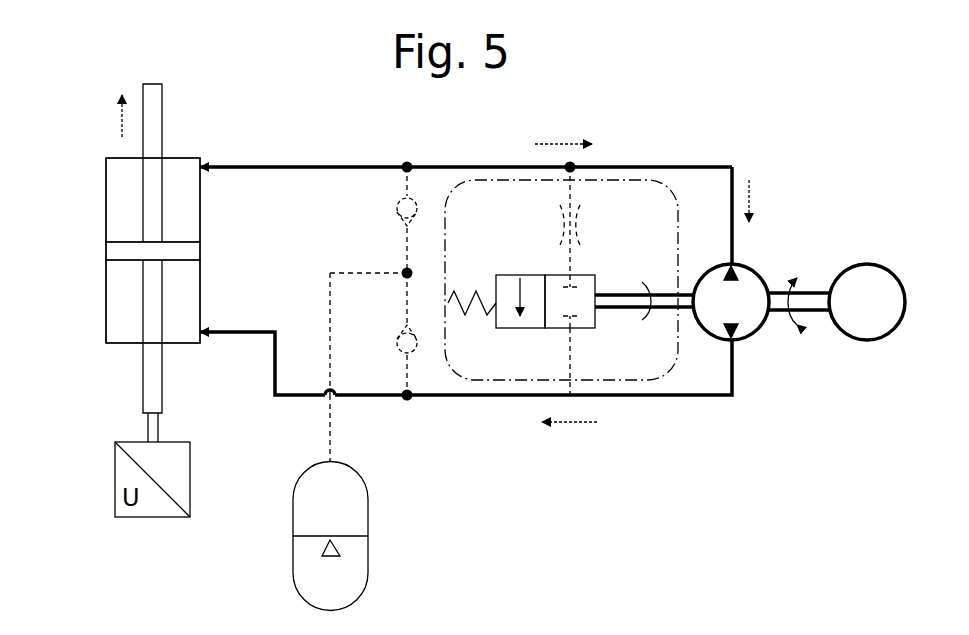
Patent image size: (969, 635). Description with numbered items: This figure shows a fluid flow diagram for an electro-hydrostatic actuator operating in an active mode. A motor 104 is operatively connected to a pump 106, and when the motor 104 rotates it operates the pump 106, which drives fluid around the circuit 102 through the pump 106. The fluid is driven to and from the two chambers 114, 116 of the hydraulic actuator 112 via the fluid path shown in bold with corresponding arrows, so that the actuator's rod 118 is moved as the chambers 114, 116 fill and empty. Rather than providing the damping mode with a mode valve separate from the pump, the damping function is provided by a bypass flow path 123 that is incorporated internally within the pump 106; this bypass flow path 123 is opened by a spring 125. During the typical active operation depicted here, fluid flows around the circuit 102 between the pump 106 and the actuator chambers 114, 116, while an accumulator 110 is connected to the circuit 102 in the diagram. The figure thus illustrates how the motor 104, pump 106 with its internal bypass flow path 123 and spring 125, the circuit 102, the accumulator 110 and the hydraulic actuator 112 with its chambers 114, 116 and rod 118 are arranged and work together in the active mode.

The circuit 102 is at (744, 130).
The motor 104 is at (880, 268).
The pump 106 is at (755, 318).
The hydraulic accumulator 110 is at (350, 500).
The hydraulic actuator 112 is at (130, 248).
The chamber 114 is at (118, 186).
The chamber 116 is at (120, 325).
The piston rod 118 is at (158, 110).
The bypass flow path 123 is at (584, 277).
The spring 125 is at (482, 300).